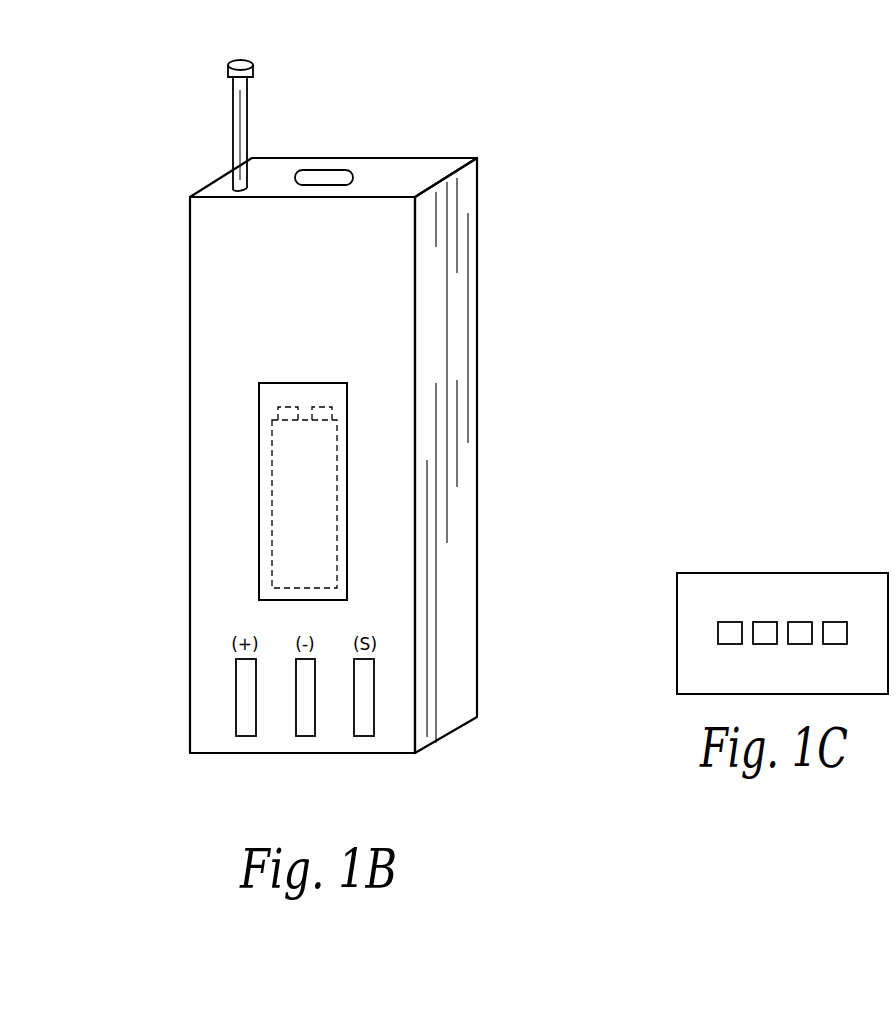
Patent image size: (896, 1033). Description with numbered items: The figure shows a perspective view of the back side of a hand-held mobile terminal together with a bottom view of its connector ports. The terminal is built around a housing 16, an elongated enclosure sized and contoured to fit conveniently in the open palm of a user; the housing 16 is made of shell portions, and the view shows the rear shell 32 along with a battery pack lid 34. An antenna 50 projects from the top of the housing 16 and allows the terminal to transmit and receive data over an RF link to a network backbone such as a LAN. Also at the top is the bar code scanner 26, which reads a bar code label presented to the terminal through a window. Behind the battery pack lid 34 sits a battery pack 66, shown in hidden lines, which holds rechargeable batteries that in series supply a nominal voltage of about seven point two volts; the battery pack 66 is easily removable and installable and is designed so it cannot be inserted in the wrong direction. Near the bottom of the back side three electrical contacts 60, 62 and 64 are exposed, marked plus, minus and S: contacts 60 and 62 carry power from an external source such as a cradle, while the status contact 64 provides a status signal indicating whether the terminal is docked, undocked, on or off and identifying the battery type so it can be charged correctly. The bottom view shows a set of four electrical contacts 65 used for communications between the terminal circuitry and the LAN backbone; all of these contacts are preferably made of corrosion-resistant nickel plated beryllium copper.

In FIG. 1B, the housing 16 is at (200, 342).
In FIG. 1B, the bar code scanner 26 is at (315, 177).
In FIG. 1B, the rear shell 32 is at (393, 490).
In FIG. 1B, the battery pack lid 34 is at (259, 508).
In FIG. 1B, the antenna 50 is at (237, 130).
In FIG. 1B, the electrical contact 60 is at (250, 733).
In FIG. 1B, the electrical contact 62 is at (307, 733).
In FIG. 1B, the status contact 64 is at (368, 733).
In FIG. 1C, the set of four electrical contacts 65 is at (698, 641).
In FIG. 1B, the battery pack 66 is at (275, 450).